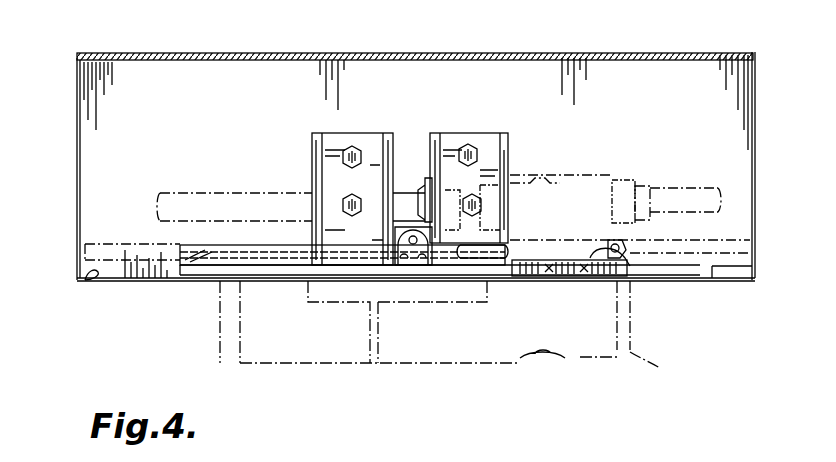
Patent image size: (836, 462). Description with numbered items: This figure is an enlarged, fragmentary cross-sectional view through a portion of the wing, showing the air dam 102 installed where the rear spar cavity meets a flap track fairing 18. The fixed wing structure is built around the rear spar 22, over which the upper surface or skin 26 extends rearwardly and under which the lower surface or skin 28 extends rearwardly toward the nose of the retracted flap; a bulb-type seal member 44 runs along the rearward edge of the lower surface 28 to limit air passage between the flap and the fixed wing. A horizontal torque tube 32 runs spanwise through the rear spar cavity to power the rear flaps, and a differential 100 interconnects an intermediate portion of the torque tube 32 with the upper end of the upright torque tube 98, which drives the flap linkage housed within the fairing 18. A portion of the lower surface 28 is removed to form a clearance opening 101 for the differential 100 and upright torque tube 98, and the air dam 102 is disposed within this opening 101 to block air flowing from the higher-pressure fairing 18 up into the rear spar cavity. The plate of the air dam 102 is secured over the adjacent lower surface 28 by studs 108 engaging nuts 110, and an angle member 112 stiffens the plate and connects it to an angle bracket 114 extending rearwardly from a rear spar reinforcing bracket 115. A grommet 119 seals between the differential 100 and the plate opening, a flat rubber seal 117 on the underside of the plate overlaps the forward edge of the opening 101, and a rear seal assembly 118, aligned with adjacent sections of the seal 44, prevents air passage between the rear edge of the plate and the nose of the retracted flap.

The flap track fairing 18 is at (218, 358).
The rear spar 22 is at (80, 130).
The upper surface or skin 26 is at (113, 58).
The lower surface or skin 28 is at (88, 283).
The torque tube 32 is at (208, 193).
The bulb-type seal member 44 is at (95, 243).
The upright torque tube 98 is at (538, 334).
The differential 100 is at (540, 178).
The clearance opening 101 is at (277, 275).
The air dam 102 is at (168, 240).
The stud 108 is at (622, 240).
The nut 110 is at (190, 280).
The angle member 112 is at (413, 265).
The angle bracket 114 is at (420, 178).
The rear spar reinforcing bracket 115 is at (492, 133).
The seal 117 is at (243, 279).
The rear seal assembly 118 is at (630, 268).
The grommet 119 is at (573, 357).